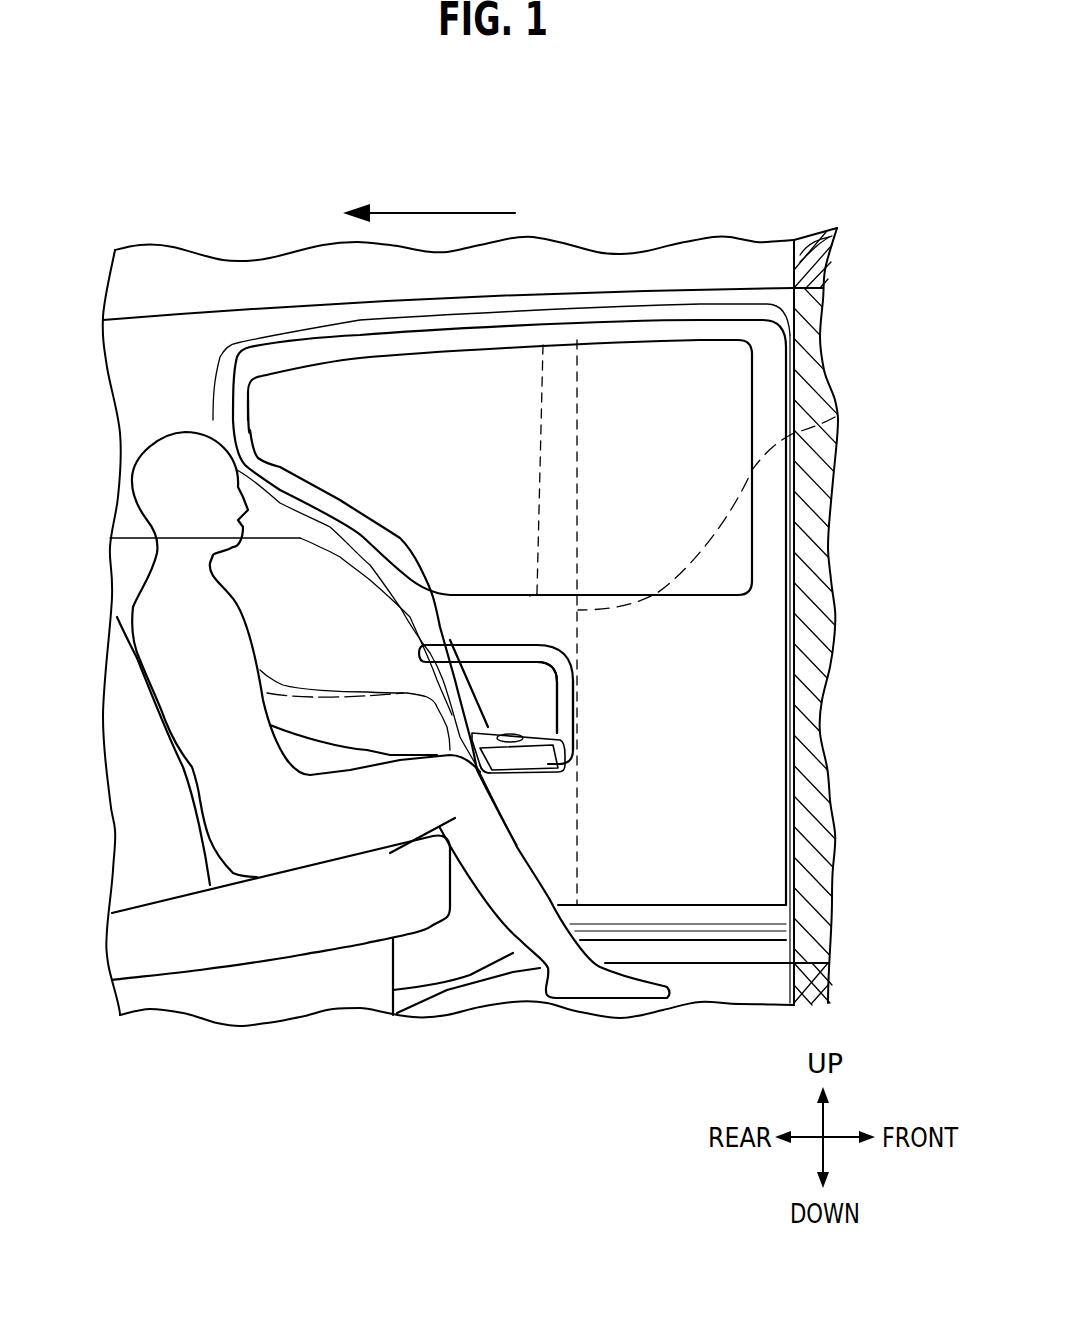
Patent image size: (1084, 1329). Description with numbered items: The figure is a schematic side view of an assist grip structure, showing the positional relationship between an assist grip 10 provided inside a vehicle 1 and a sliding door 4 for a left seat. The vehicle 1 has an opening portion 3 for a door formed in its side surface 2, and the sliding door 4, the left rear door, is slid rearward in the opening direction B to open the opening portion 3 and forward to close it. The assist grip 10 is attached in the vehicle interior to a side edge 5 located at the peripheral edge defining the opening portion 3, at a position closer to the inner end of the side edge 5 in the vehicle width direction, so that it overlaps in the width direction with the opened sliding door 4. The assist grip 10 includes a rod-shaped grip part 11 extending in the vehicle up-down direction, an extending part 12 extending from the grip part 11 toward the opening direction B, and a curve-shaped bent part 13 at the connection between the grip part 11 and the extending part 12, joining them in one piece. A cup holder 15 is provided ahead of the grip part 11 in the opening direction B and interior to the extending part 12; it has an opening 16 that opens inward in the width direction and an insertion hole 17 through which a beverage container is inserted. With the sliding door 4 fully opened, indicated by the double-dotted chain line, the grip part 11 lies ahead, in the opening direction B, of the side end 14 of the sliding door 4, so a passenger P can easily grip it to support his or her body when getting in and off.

The vehicle 1 is at (822, 243).
The side surface 2 is at (175, 343).
The opening portion 3 is at (663, 293).
The sliding door 4 is at (763, 385).
The side edge 5 is at (428, 630).
The assist grip 10 is at (686, 718).
The grip part 11 is at (567, 707).
The extending part 12 is at (477, 653).
The bent part 13 is at (565, 658).
The side end 14 is at (835, 417).
The cup holder 15 is at (574, 755).
The opening 16 is at (547, 772).
The insertion hole 17 is at (455, 687).
The passenger P is at (183, 597).
The opening direction B is at (415, 213).